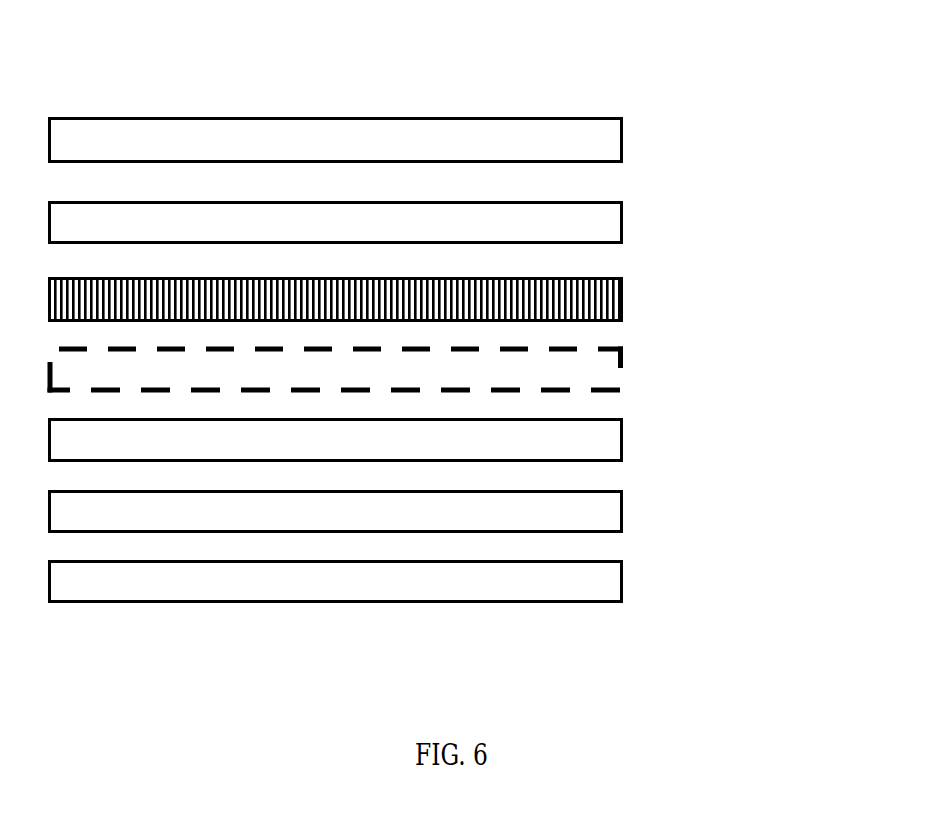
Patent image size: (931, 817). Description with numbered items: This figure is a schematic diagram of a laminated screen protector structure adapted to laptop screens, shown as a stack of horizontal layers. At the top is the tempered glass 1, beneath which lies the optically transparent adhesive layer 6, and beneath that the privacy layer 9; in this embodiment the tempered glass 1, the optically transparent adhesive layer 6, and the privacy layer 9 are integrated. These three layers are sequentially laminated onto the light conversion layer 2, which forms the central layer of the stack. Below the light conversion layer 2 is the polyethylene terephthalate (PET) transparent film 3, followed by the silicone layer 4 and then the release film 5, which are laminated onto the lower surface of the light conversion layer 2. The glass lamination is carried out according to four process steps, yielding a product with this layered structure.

The tempered glass 1 is at (625, 138).
The optically transparent adhesive layer 6 is at (625, 220).
The privacy layer 9 is at (623, 297).
The light conversion layer 2 is at (623, 368).
The polyethylene terephthalate (PET) transparent film 3 is at (623, 438).
The silicone layer 4 is at (623, 512).
The release film 5 is at (623, 582).